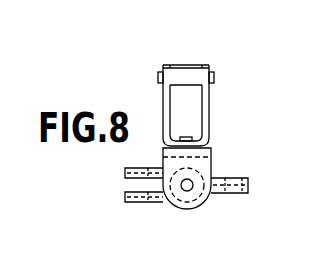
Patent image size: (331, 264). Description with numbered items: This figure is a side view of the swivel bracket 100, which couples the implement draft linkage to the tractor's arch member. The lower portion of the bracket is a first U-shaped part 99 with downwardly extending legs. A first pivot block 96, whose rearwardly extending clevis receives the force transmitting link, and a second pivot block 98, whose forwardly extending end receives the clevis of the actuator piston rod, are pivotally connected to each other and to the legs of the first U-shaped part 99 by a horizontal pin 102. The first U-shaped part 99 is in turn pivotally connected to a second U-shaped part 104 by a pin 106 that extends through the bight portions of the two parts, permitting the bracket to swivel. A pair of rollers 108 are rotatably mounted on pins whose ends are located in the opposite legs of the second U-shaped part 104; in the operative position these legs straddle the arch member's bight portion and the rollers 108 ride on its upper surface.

The swivel bracket 100 is at (200, 137).
The second U-shaped part 104 is at (163, 97).
The rollers 108 is at (185, 67).
The pin 106 is at (188, 137).
The first U-shaped part 99 is at (211, 164).
The second pivot block 98 is at (243, 181).
The first pivot block 96 is at (166, 204).
The horizontal pin 102 is at (188, 187).